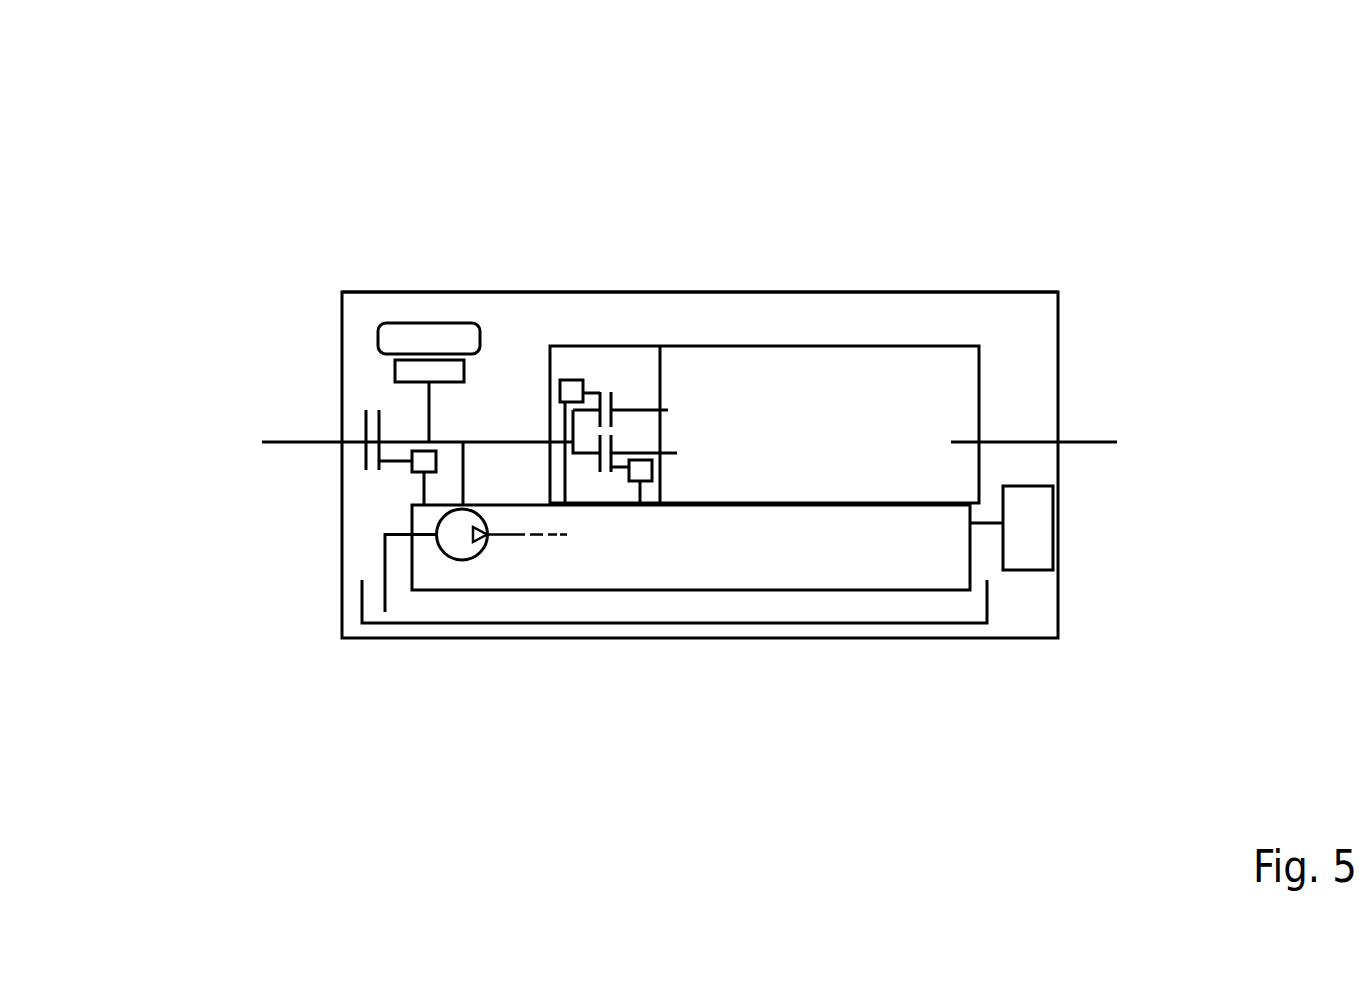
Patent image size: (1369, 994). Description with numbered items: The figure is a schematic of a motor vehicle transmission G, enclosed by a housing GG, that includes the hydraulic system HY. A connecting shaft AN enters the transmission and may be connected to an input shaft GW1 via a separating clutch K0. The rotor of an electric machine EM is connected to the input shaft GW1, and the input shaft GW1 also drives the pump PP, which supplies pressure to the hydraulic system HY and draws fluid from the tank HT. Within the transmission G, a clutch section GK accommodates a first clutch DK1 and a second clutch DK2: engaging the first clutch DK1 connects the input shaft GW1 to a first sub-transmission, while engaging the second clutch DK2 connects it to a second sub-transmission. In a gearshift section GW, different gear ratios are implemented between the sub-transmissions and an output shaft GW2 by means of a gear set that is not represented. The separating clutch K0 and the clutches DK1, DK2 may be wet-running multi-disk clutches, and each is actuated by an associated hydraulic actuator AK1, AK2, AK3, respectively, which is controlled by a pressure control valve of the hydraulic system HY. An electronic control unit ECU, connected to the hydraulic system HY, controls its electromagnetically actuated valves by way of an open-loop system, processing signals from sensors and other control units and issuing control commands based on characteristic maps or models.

The motor vehicle transmission G is at (962, 233).
The housing GG is at (762, 292).
The clutch section GK is at (618, 346).
The gearshift section GW is at (800, 346).
The connecting shaft AN is at (298, 440).
The separating clutch K0 is at (366, 395).
The input shaft GW1 is at (463, 442).
The electric machine EM is at (434, 315).
The hydraulic actuator AK1 is at (403, 472).
The hydraulic actuator AK2 is at (571, 372).
The hydraulic actuator AK3 is at (636, 484).
The first clutch DK1 is at (595, 392).
The second clutch DK2 is at (623, 439).
The output shaft GW2 is at (1088, 440).
The hydraulic system HY is at (742, 592).
The pump PP is at (445, 565).
The tank HT is at (798, 625).
The electronic control unit ECU is at (1027, 572).